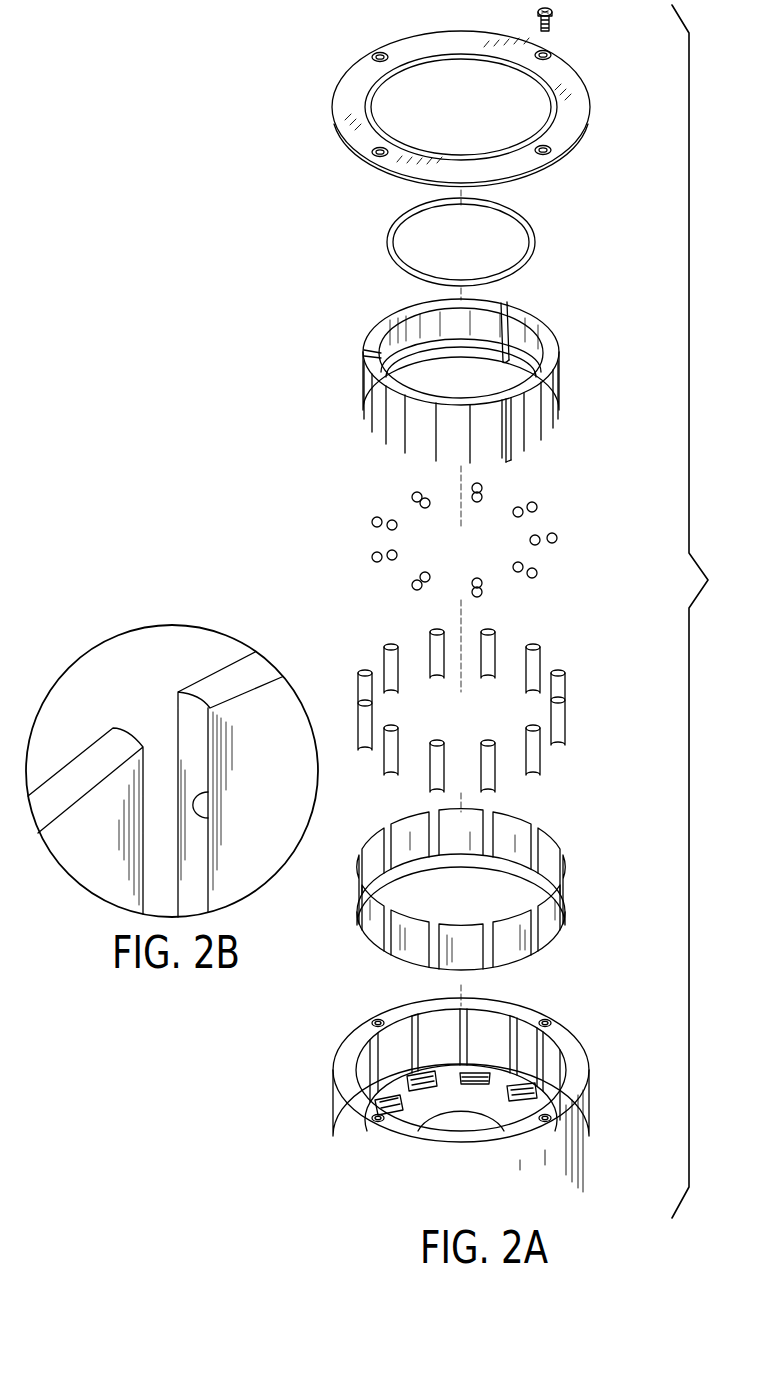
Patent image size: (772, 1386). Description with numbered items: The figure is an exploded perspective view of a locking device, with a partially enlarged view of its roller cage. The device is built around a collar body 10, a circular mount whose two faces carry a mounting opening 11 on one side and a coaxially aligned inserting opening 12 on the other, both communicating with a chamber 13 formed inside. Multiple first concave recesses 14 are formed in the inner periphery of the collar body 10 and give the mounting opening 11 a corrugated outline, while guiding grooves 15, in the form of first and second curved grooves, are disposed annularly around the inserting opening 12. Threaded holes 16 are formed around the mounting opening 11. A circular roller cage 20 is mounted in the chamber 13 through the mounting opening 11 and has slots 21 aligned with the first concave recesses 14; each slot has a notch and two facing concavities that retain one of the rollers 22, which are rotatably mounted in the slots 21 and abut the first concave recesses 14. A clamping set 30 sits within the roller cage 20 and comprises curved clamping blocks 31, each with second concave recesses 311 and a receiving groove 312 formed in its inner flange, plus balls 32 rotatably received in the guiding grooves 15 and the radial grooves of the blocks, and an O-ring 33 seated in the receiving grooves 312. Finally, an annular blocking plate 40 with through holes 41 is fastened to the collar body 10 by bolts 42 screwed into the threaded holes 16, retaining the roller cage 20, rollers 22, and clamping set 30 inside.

In FIG. 2A, the collar body 10 is at (475, 1085).
In FIG. 2A, the mounting opening 11 is at (455, 1118).
In FIG. 2A, the inserting opening 12 is at (413, 1105).
In FIG. 2A, the chamber 13 is at (500, 1052).
In FIG. 2A, the first concave recesses 14 is at (393, 1052).
In FIG. 2A, the guiding grooves 15 is at (523, 1078).
In FIG. 2A, the threaded holes 16 is at (372, 1118).
In FIG. 2A, the roller cage 20 is at (484, 887).
In FIG. 2A, the slots 21 is at (390, 937).
In FIG. 2B, the slots 21 is at (207, 812).
In FIG. 2A, the rollers 22 is at (535, 662).
In FIG. 2A, the clamping set 30 is at (345, 388).
In FIG. 2A, the clamping blocks 31 is at (370, 318).
In FIG. 2A, the second concave recesses 311 is at (527, 433).
In FIG. 2A, the receiving groove 312 is at (508, 350).
In FIG. 2A, the balls 32 is at (555, 540).
In FIG. 2A, the O-ring 33 is at (388, 243).
In FIG. 2A, the blocking plate 40 is at (316, 95).
In FIG. 2A, the through holes 41 is at (543, 147).
In FIG. 2A, the bolts 42 is at (552, 29).